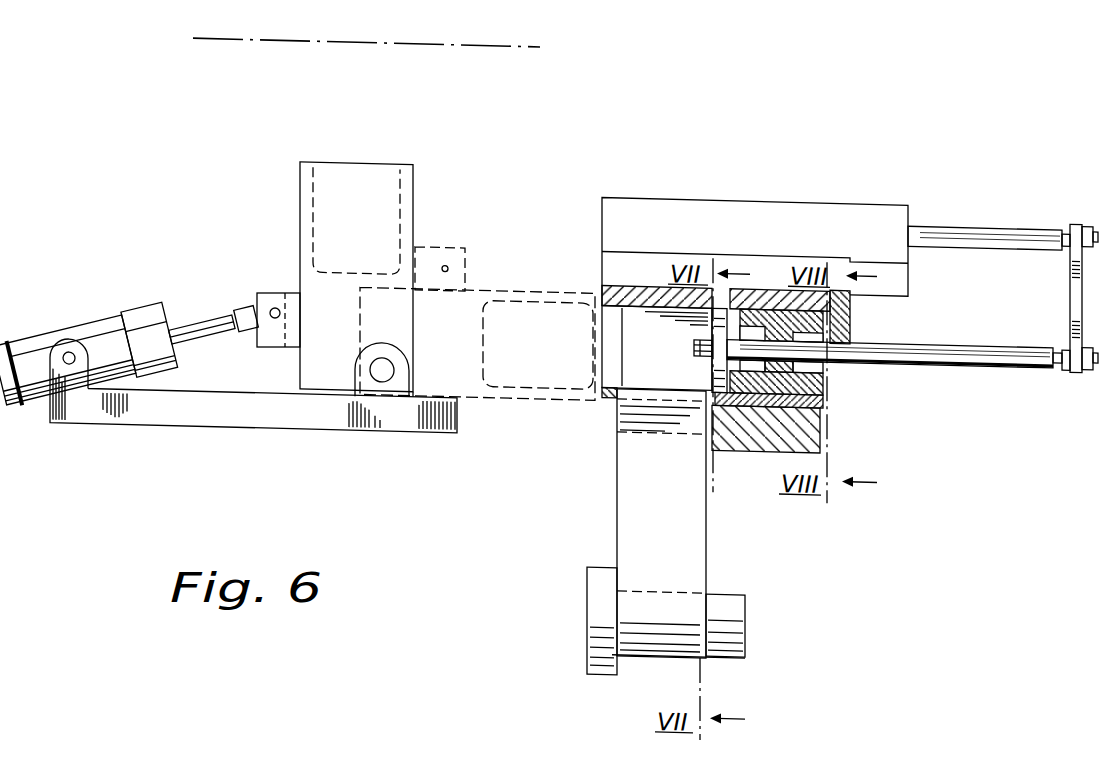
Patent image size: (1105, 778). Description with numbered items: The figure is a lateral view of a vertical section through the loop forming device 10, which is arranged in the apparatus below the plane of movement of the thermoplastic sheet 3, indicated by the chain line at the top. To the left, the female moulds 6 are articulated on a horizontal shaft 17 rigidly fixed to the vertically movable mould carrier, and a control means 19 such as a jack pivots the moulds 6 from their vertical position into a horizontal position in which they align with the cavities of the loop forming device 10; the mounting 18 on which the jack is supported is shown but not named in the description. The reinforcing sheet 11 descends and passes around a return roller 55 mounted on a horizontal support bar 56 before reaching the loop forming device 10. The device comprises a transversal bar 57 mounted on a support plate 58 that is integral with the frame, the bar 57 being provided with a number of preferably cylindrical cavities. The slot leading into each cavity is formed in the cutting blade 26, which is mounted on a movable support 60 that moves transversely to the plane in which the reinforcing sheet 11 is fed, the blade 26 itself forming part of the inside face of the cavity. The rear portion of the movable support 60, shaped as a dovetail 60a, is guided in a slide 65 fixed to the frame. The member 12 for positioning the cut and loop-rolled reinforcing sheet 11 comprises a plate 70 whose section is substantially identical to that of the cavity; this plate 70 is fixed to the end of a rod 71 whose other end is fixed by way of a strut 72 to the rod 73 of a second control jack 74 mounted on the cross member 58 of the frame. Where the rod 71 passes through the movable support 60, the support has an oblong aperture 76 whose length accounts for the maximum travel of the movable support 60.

The thermoplastic sheet 3 is at (490, 52).
The female moulds 6 is at (413, 174).
The loop forming device 10 is at (594, 437).
The reinforcing sheet 11 is at (632, 517).
The positioning member 12 is at (745, 449).
The horizontal shaft 17 is at (383, 386).
The mounting bracket 18 is at (163, 429).
The control means 19 is at (98, 327).
The cutting blade 26 is at (707, 397).
The return roller 55 is at (727, 604).
The horizontal support bar 56 is at (598, 608).
The transversal bar 57 is at (628, 295).
The support plate 58 is at (602, 272).
The movable support 60 is at (827, 380).
The dovetail 60a is at (838, 314).
The slide 65 is at (785, 286).
The plate 70 is at (713, 363).
The rod 71 is at (1000, 350).
The strut 72 is at (1073, 284).
The rod of second control jack 73 is at (983, 225).
The second control jack 74 is at (870, 209).
The oblong aperture 76 is at (813, 400).